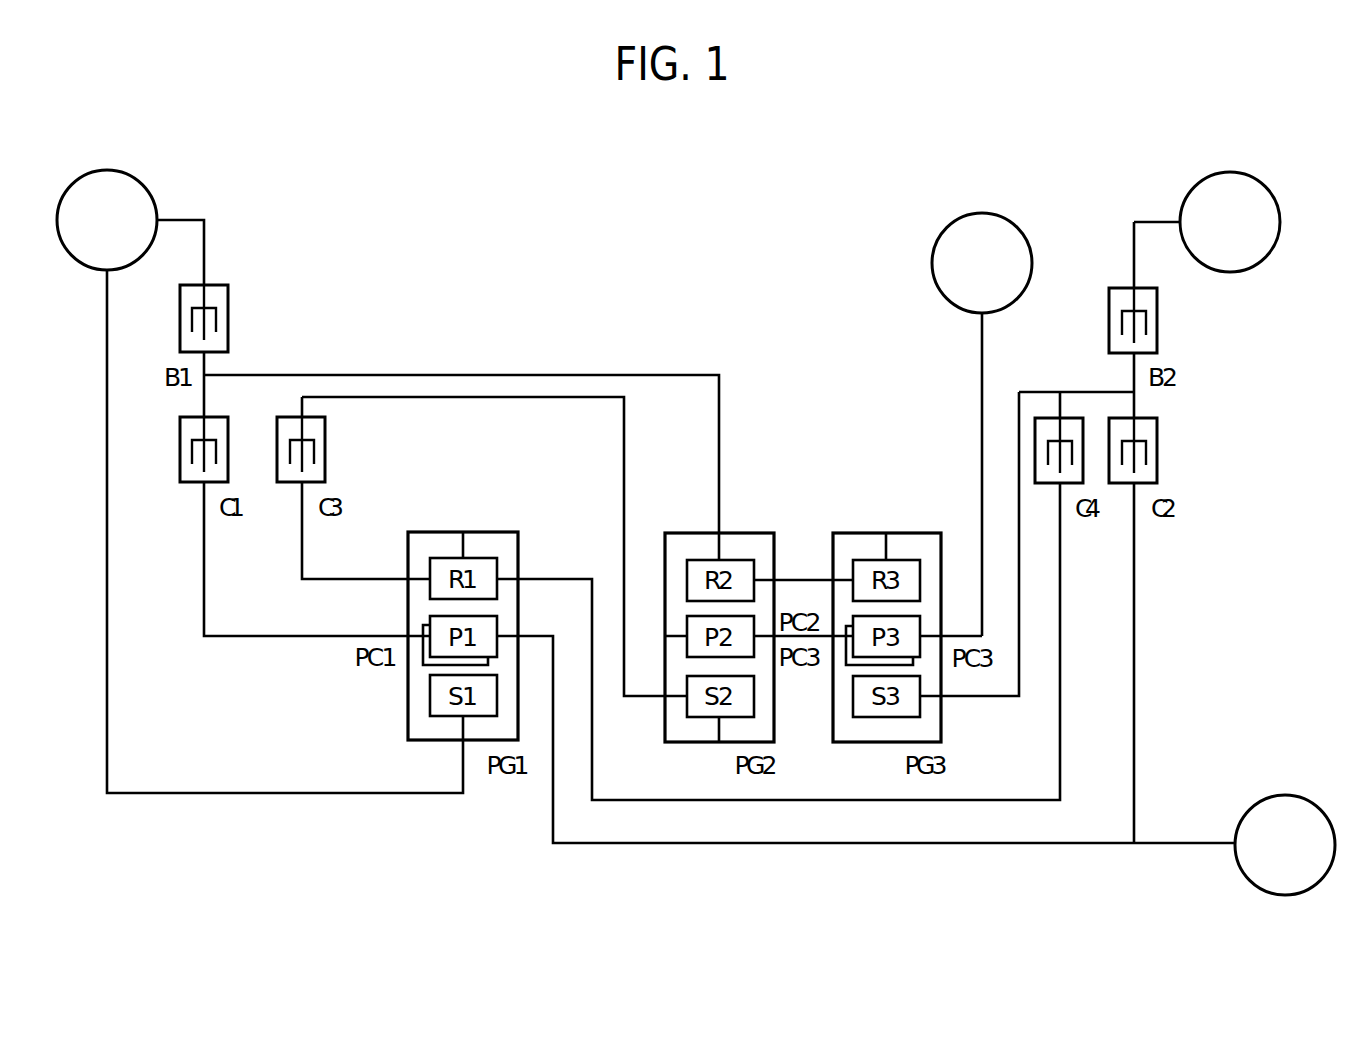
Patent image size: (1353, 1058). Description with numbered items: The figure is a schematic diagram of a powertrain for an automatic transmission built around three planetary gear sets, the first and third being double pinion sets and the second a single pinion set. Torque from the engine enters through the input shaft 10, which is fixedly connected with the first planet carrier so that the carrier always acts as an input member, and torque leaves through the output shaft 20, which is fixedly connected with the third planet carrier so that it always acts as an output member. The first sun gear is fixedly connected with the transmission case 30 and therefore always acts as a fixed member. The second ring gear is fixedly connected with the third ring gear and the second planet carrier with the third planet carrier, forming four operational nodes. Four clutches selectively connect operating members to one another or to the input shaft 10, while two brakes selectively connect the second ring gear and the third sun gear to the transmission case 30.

The input shaft 10 is at (1285, 795).
The output shaft 20 is at (983, 213).
The transmission case 30 is at (107, 170).